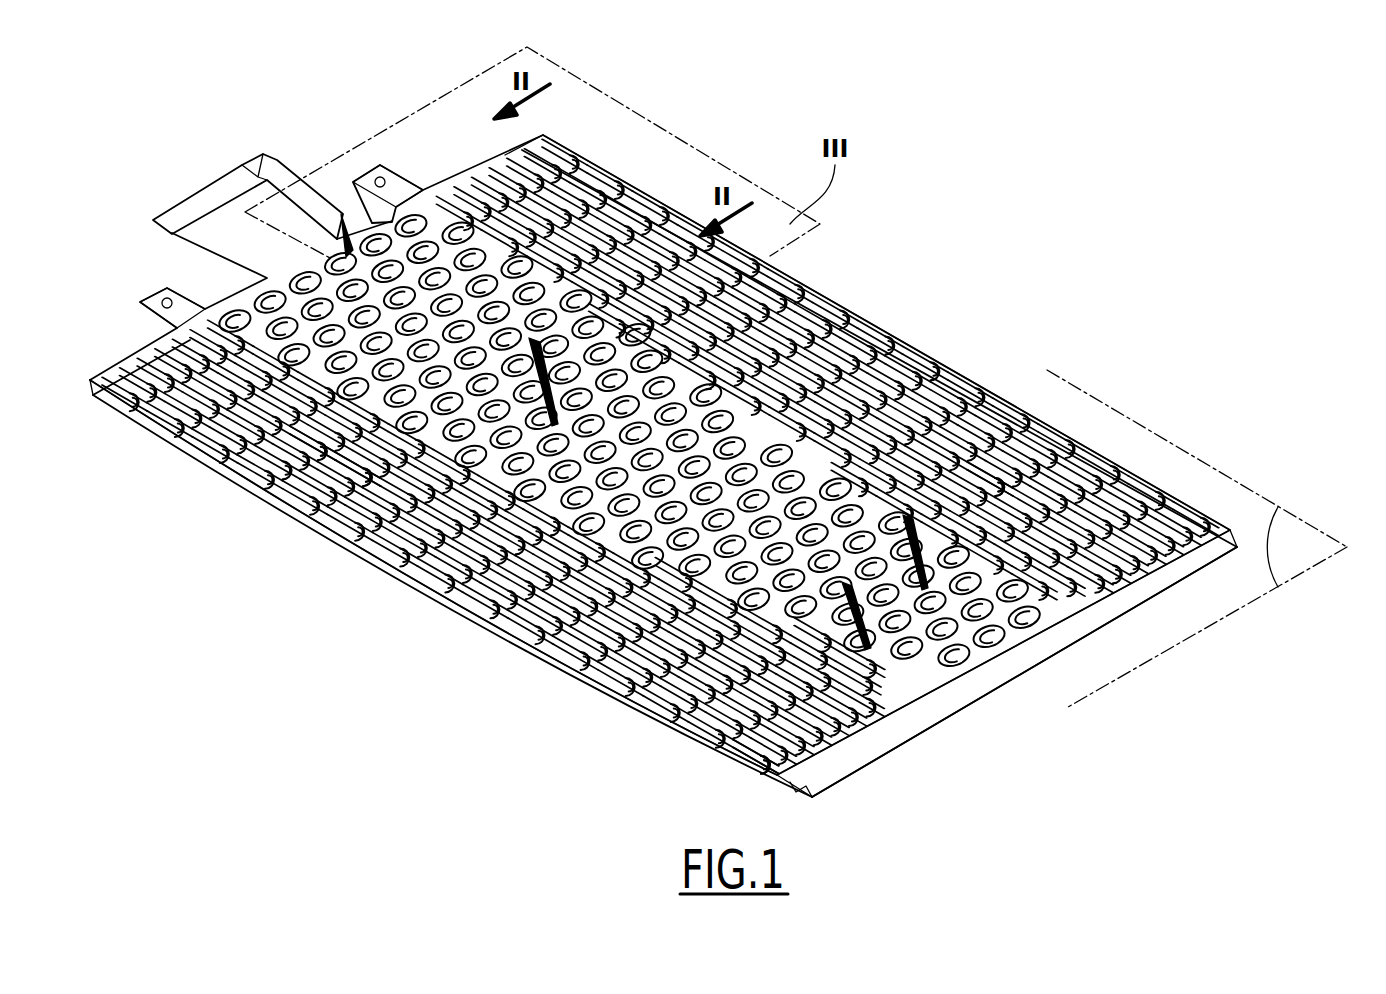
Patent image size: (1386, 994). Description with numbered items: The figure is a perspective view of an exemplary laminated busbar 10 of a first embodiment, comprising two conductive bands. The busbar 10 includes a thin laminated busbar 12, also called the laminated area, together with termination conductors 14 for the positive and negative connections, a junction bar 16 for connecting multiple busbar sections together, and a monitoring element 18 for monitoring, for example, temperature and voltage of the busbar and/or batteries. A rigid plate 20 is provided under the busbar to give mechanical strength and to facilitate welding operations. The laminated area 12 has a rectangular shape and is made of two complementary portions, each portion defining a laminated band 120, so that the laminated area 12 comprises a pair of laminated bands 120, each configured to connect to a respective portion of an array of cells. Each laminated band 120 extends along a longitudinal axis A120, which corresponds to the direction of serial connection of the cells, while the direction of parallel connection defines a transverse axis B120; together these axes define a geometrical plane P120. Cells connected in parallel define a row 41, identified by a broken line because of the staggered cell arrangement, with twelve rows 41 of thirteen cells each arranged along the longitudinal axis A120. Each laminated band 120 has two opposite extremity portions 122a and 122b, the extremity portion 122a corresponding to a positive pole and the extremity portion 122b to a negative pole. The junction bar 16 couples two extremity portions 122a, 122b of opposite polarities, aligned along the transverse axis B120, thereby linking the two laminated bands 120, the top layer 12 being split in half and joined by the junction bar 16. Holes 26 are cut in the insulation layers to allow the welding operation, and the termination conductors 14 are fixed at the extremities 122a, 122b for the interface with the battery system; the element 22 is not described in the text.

The busbar 10 is at (1138, 220).
The laminated busbar 12 is at (582, 666).
The termination conductors 14 is at (162, 294).
The junction bar 16 is at (968, 725).
The monitoring element 18 is at (232, 182).
The rigid plate 20 is at (992, 392).
The strip portions 22 is at (350, 560).
The holes 26 is at (982, 390).
The row 41 is at (745, 770).
The laminated band 120 is at (905, 380).
The extremity portion 122a is at (525, 152).
The extremity portion 122b is at (100, 398).
The longitudinal axis A120 is at (1197, 446).
The transverse axis B120 is at (1207, 636).
The geometrical plane P120 is at (1297, 547).